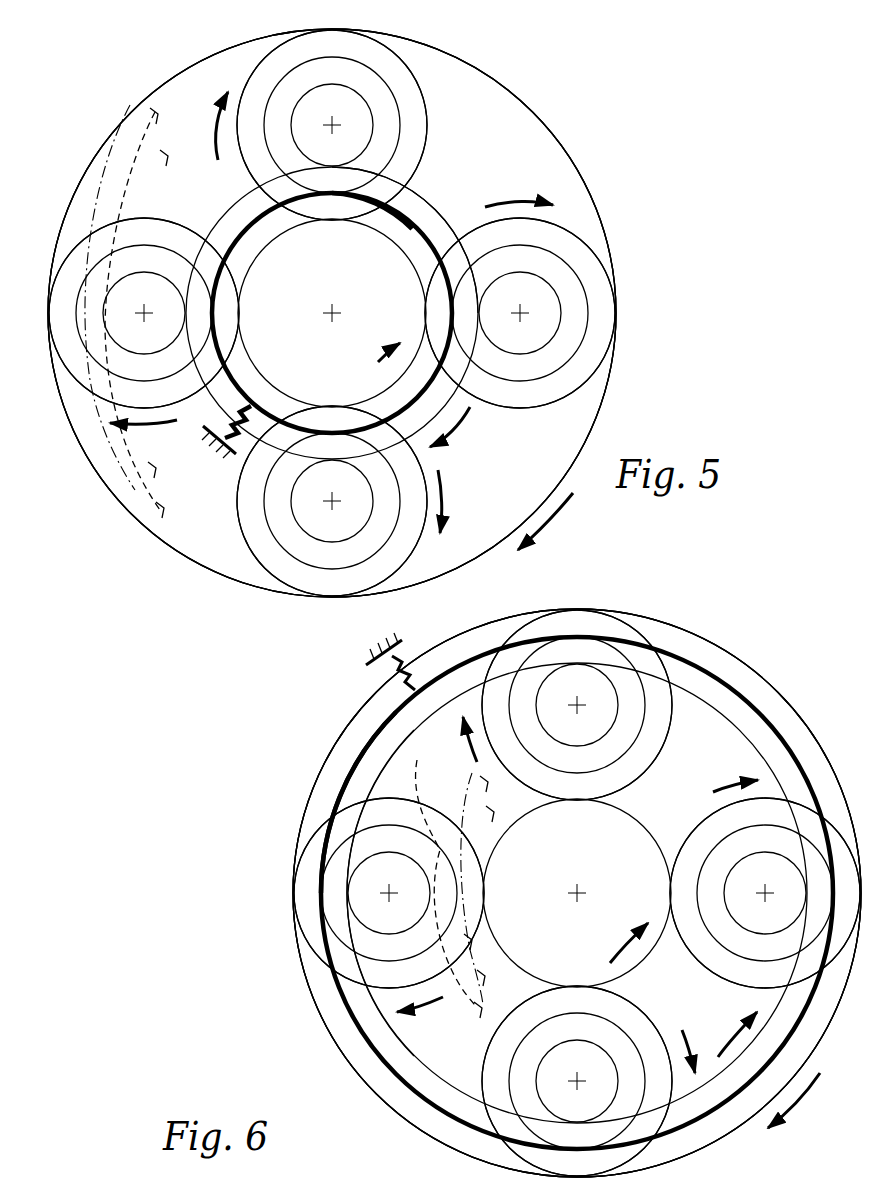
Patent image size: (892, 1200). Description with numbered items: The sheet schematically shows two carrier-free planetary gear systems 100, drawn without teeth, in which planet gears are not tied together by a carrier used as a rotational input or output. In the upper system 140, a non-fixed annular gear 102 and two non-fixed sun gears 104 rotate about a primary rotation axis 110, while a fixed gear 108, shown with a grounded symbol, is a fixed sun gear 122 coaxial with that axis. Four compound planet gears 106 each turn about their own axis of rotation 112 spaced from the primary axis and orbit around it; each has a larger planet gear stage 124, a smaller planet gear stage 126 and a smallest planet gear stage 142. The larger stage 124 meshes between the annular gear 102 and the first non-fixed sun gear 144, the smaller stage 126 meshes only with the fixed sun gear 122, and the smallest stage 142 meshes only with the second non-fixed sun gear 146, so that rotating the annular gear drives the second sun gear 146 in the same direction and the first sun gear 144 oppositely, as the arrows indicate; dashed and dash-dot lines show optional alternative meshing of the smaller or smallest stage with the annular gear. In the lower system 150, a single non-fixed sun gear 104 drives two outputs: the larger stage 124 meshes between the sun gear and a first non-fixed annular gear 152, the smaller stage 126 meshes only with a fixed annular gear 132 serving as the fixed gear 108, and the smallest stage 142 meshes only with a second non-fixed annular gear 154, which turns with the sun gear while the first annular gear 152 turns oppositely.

In FIG. 5, the planetary gear system 100 is at (670, 58).
In FIG. 6, the planetary gear system 100 is at (195, 693).
In FIG. 5, the non-fixed annular gear 102 is at (130, 110).
In FIG. 6, the non-fixed annular gear 102 is at (782, 685).
In FIG. 5, the non-fixed sun gear 104 is at (269, 232).
In FIG. 6, the non-fixed sun gear 104 is at (432, 783).
In FIG. 5, the compound planet gear 106 is at (420, 74).
In FIG. 6, the compound planet gear 106 is at (680, 710).
In FIG. 5, the fixed gear 108 is at (231, 232).
In FIG. 6, the fixed gear 108 is at (770, 670).
In FIG. 5, the primary rotation axis 110 is at (334, 311).
In FIG. 6, the primary rotation axis 110 is at (578, 891).
In FIG. 5, the axis of rotation 112 is at (342, 120).
In FIG. 6, the axis of rotation 112 is at (578, 704).
In FIG. 5, the fixed sun gear 122 is at (449, 217).
In FIG. 5, the larger planet gear stage 124 is at (398, 54).
In FIG. 6, the larger planet gear stage 124 is at (647, 633).
In FIG. 5, the smaller planet gear stage 126 is at (257, 88).
In FIG. 6, the smaller planet gear stage 126 is at (487, 683).
In FIG. 6, the fixed annular gear 132 is at (382, 1067).
In FIG. 5, the planetary gear system 140 is at (648, 98).
In FIG. 5, the smallest planet gear stage 142 is at (302, 95).
In FIG. 6, the smallest planet gear stage 142 is at (560, 640).
In FIG. 5, the first non-fixed sun gear 144 is at (387, 200).
In FIG. 5, the second non-fixed sun gear 146 is at (429, 192).
In FIG. 6, the planetary gear system 150 is at (215, 723).
In FIG. 6, the first non-fixed annular gear 152 is at (372, 737).
In FIG. 6, the second non-fixed annular gear 154 is at (393, 753).